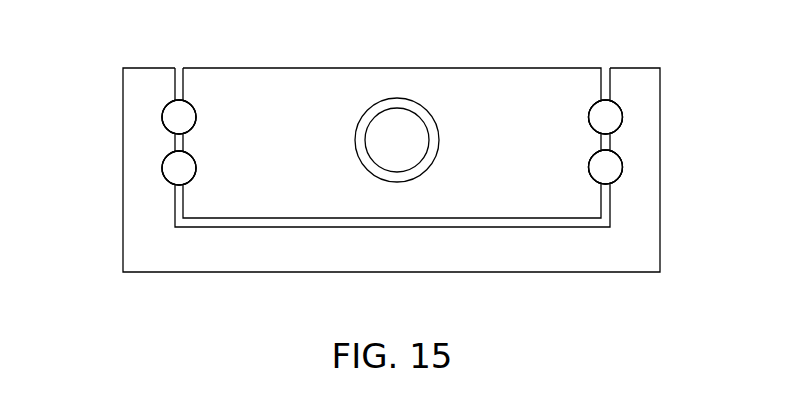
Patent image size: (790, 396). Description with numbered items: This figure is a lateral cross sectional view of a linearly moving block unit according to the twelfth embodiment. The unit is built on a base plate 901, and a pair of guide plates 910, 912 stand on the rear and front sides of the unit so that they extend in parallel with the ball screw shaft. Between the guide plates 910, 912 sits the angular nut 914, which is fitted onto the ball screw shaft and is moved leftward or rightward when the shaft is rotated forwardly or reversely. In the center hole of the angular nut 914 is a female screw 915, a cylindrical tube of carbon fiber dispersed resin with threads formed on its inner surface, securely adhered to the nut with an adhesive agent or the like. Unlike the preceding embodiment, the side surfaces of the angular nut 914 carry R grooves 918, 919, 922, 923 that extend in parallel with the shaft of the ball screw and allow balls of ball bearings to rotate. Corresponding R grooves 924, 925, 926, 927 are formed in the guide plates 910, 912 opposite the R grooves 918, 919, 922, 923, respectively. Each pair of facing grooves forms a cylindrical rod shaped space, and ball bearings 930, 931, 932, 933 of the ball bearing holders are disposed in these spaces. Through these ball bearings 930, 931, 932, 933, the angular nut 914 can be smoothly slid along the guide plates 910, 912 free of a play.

The base plate 901 is at (353, 257).
The guide plate 910 is at (153, 78).
The guide plate 912 is at (634, 78).
The angular nut 914 is at (303, 83).
The female screw 915 is at (397, 105).
The R groove 918 is at (188, 103).
The R groove 919 is at (190, 182).
The R groove 922 is at (595, 105).
The R groove 923 is at (593, 180).
The R groove 924 is at (162, 117).
The R groove 925 is at (163, 170).
The R groove 926 is at (624, 116).
The R groove 927 is at (624, 165).
The ball bearing 930 is at (187, 120).
The ball bearing 931 is at (187, 168).
The ball bearing 932 is at (600, 120).
The ball bearing 933 is at (600, 168).